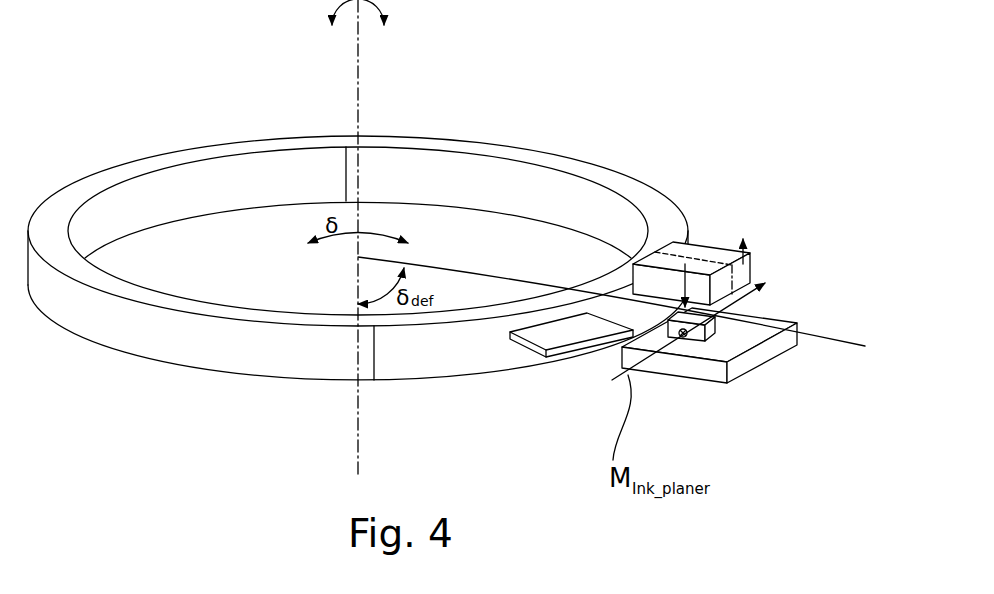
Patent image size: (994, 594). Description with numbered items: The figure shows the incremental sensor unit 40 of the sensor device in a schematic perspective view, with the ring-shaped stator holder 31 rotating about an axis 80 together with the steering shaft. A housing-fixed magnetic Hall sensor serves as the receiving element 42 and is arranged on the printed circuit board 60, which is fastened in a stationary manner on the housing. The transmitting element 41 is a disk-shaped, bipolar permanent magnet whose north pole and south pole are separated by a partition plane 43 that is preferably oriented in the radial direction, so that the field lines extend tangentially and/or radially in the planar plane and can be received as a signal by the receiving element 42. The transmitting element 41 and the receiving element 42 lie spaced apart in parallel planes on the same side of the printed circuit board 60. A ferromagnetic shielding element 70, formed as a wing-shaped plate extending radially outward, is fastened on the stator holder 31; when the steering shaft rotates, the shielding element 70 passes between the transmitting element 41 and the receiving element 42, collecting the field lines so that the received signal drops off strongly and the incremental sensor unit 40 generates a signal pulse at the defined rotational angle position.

The incremental sensor unit 40 is at (358, 199).
The stator holder 31 is at (533, 187).
The transmitting element 41 is at (705, 232).
The partition plane 43 is at (684, 256).
The receiving element 42 is at (713, 341).
The printed circuit board 60 is at (767, 355).
The shielding element 70 is at (563, 331).
The rotation axis 80 is at (357, 414).